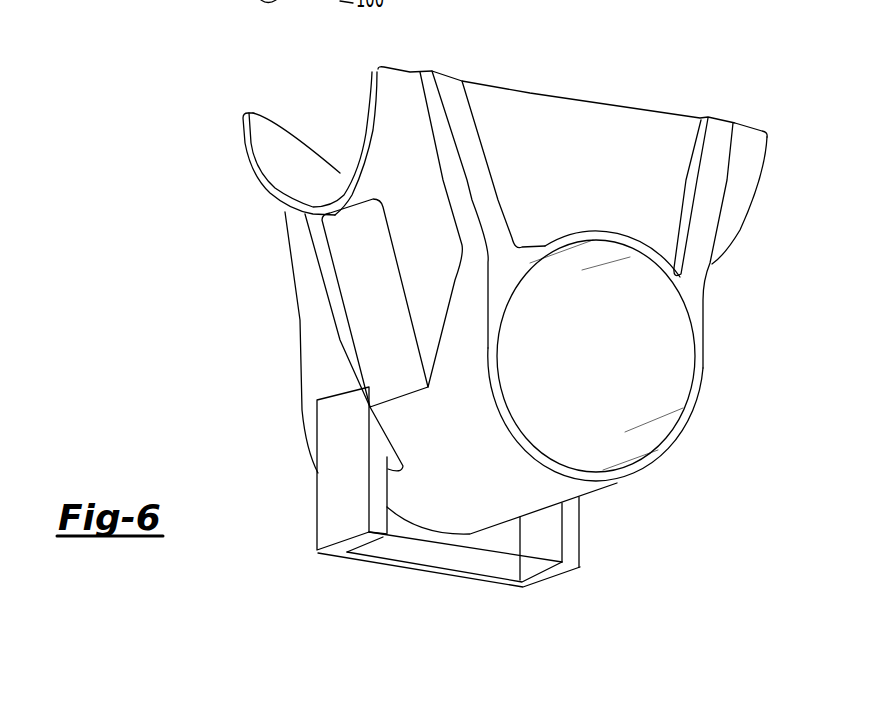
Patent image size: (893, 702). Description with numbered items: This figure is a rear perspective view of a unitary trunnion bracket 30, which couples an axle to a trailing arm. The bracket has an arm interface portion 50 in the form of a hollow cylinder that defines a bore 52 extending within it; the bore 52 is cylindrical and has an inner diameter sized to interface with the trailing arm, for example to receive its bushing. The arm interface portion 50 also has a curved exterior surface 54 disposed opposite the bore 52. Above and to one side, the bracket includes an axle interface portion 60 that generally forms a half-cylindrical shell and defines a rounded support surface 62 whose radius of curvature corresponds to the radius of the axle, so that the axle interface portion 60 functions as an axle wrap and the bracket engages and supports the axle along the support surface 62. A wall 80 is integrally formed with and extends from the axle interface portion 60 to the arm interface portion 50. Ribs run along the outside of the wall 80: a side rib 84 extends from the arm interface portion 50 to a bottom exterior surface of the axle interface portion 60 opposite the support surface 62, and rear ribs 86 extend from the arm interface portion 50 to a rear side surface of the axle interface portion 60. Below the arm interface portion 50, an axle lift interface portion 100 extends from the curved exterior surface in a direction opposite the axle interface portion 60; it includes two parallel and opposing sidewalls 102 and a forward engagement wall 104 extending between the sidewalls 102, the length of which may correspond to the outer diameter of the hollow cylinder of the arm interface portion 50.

The trunnion bracket 30 is at (787, 131).
The arm interface portion 50 is at (690, 437).
The bore 52 is at (643, 342).
The curved exterior surface 54 is at (582, 488).
The axle interface portion 60 is at (242, 125).
The support surface 62 is at (285, 170).
The wall 80 is at (612, 147).
The side rib 84 is at (357, 285).
The rear rib 86 is at (460, 79).
The axle lift interface portion 100 is at (448, 574).
The sidewalls 102 is at (331, 498).
The forward engagement wall 104 is at (390, 541).